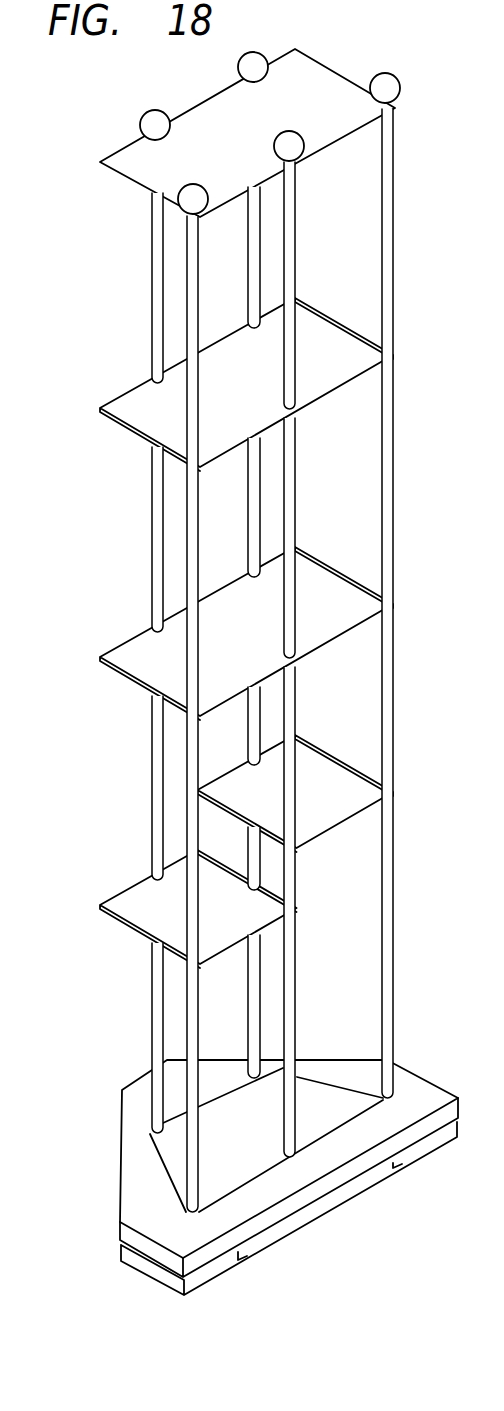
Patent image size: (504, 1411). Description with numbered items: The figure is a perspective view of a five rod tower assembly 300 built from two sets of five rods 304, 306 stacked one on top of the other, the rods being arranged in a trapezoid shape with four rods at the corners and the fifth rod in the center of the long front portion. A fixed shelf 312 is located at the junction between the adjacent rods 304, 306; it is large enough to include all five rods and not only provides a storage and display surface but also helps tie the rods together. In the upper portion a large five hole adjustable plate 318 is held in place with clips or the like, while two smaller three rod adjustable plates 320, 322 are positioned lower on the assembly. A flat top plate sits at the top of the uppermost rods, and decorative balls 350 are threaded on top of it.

The five rod assembly 300 is at (276, 681).
The rods 304 is at (155, 1047).
The rods 306 is at (388, 303).
The fixed shelf 312 is at (352, 612).
The adjustable plate 318 is at (340, 375).
The smaller adjustable plate 320 is at (140, 922).
The smaller adjustable plate 322 is at (358, 800).
The decorative balls 350 is at (388, 80).